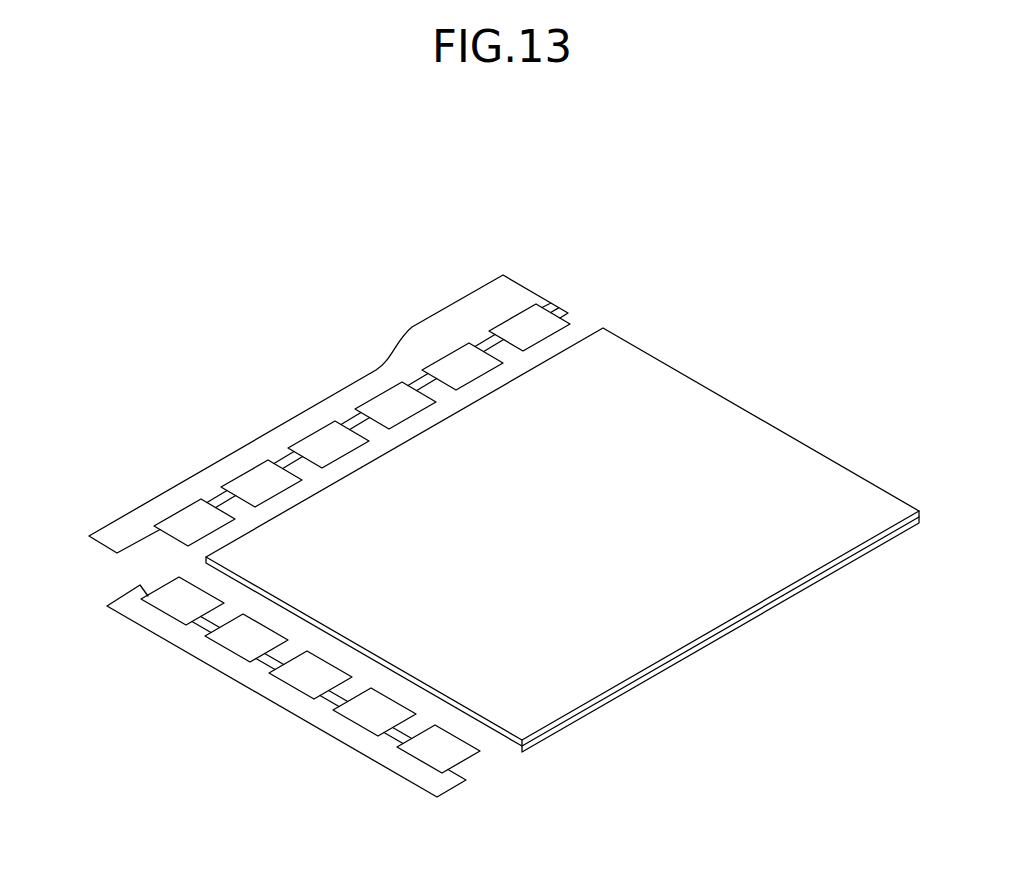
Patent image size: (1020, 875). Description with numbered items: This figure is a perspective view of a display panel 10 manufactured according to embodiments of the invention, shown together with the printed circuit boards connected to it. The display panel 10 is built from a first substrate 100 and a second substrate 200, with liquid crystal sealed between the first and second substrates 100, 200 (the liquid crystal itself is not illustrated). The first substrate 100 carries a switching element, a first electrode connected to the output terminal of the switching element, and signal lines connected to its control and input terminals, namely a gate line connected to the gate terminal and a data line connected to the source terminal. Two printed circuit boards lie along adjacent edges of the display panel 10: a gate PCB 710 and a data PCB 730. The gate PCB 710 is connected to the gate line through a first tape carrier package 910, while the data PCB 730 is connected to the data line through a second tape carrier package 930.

The display panel 10 is at (485, 540).
The first substrate 100 is at (230, 590).
The second substrate 200 is at (302, 592).
The gate PCB 710 is at (344, 729).
The data PCB 730 is at (202, 482).
The first tape carrier package 910 is at (318, 684).
The second tape carrier package 930 is at (177, 523).